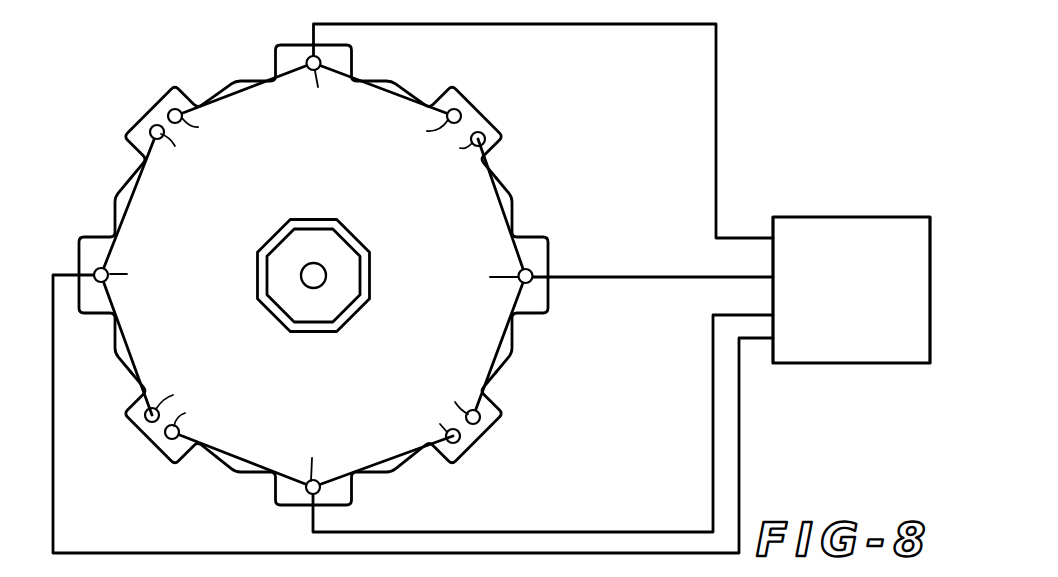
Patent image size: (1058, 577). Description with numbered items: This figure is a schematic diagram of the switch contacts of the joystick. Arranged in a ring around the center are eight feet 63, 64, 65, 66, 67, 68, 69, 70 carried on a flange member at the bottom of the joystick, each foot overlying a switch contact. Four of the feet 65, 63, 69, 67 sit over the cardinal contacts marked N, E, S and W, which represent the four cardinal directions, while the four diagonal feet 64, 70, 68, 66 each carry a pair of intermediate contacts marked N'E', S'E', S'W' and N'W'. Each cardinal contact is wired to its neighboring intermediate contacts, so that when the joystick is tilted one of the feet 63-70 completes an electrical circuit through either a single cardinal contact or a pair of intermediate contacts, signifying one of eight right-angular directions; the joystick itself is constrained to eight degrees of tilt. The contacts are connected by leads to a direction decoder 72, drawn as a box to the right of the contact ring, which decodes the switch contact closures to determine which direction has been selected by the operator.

The foot 63 is at (548, 244).
The foot 64 is at (485, 126).
The foot 65 is at (357, 49).
The foot 66 is at (188, 86).
The foot 67 is at (89, 236).
The foot 68 is at (183, 463).
The foot 69 is at (350, 496).
The foot 70 is at (503, 412).
The direction decoder 72 is at (797, 217).